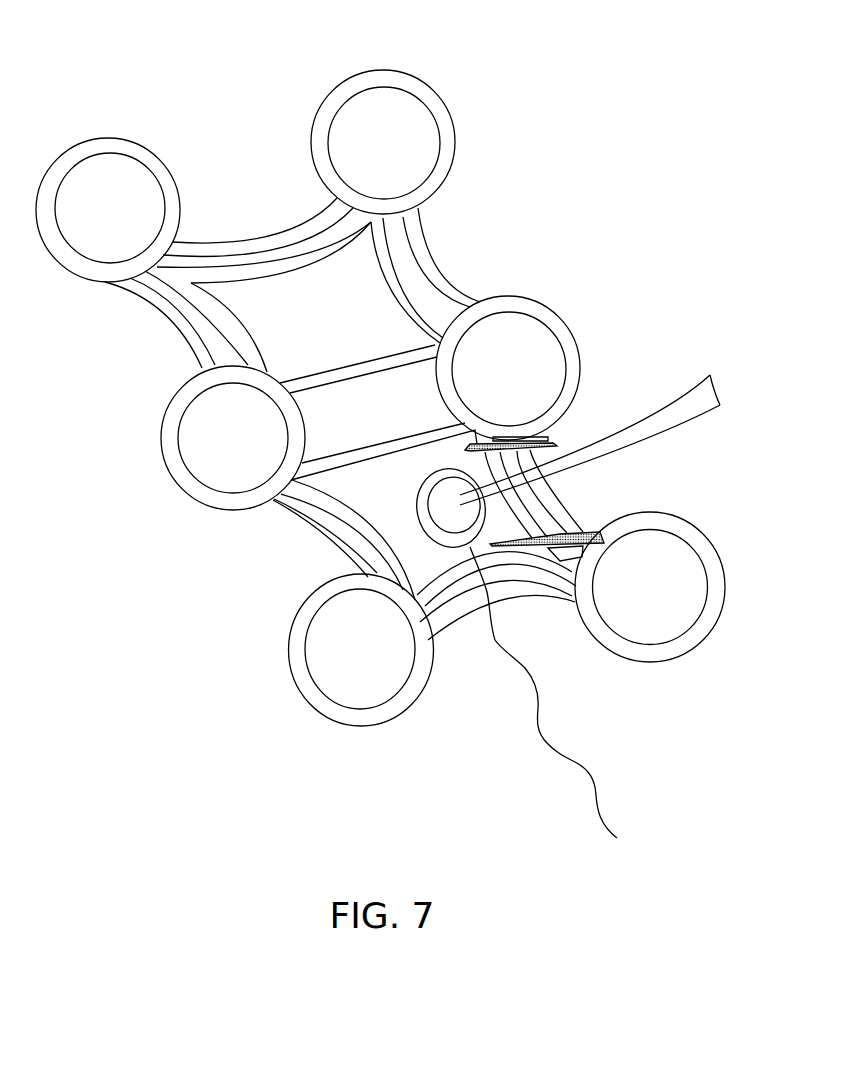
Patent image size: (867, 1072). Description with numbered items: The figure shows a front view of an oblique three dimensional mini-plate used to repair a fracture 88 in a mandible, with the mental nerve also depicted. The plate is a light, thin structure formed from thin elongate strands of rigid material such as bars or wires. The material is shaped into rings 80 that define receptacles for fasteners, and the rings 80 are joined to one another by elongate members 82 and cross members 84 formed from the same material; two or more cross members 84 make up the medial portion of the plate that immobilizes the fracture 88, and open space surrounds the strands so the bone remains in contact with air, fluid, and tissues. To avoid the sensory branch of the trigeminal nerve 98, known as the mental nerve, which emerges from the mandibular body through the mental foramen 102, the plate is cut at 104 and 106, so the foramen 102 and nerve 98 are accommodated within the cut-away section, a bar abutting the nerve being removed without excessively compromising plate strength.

The rings 80 is at (408, 72).
The elongate members 82 is at (182, 332).
The cross members 84 is at (265, 236).
The fracture 88 is at (573, 760).
The trigeminal nerve 98 is at (698, 395).
The mental foramen 102 is at (413, 493).
The cut 104 is at (551, 442).
The cut 106 is at (590, 533).